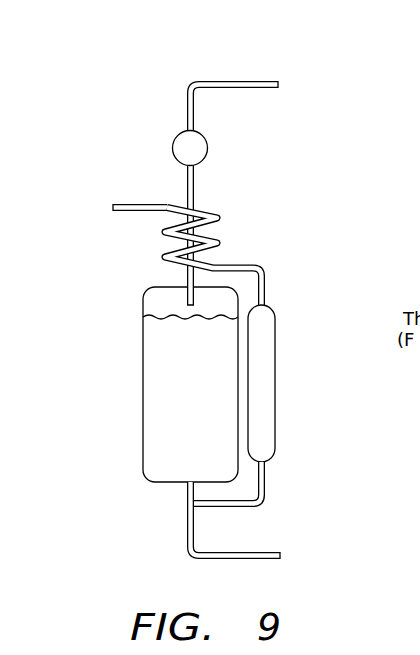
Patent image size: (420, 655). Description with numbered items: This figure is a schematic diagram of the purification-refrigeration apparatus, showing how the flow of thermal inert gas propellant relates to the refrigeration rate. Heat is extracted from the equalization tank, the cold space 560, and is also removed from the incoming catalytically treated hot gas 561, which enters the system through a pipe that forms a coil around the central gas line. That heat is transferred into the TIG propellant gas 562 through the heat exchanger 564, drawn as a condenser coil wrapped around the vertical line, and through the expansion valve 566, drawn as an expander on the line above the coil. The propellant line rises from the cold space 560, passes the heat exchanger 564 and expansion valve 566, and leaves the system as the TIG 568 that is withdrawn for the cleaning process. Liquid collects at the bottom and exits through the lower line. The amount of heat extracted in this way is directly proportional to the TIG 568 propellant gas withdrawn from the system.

The cold space 560 is at (143, 365).
The catalytically treated hot gas 561 is at (128, 212).
The TIG propellant gas 562 is at (238, 80).
The heat exchanger 564 is at (212, 214).
The expansion valve 566 is at (175, 138).
The TIG 568 is at (320, 78).